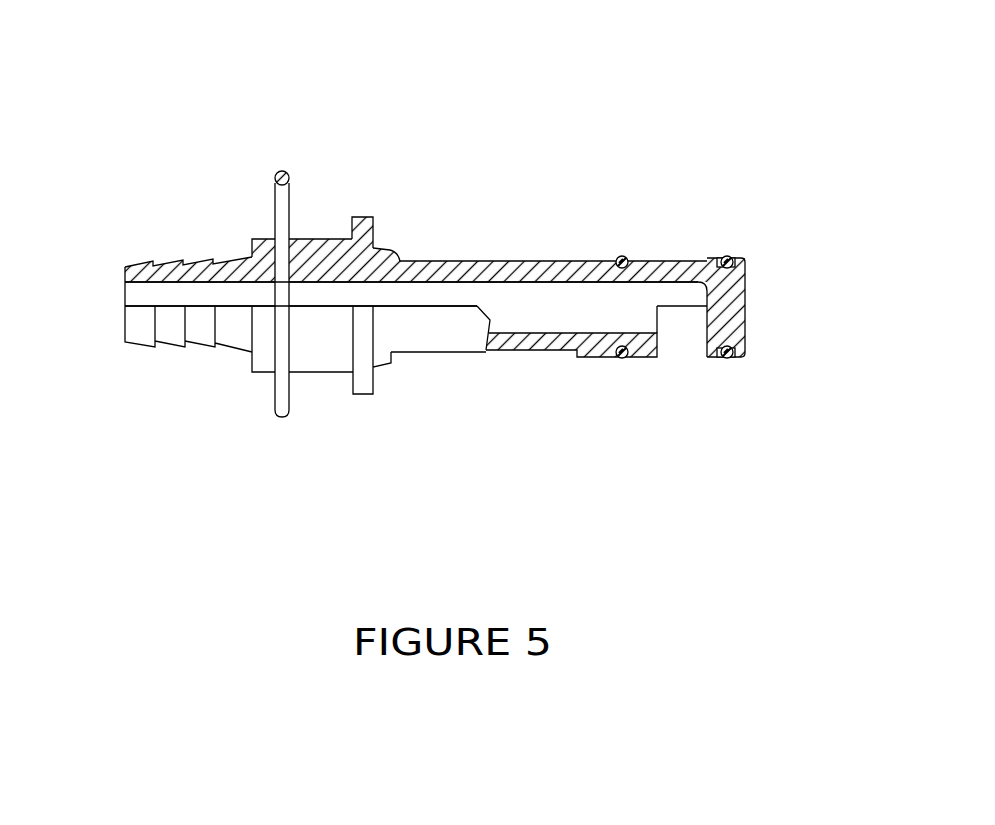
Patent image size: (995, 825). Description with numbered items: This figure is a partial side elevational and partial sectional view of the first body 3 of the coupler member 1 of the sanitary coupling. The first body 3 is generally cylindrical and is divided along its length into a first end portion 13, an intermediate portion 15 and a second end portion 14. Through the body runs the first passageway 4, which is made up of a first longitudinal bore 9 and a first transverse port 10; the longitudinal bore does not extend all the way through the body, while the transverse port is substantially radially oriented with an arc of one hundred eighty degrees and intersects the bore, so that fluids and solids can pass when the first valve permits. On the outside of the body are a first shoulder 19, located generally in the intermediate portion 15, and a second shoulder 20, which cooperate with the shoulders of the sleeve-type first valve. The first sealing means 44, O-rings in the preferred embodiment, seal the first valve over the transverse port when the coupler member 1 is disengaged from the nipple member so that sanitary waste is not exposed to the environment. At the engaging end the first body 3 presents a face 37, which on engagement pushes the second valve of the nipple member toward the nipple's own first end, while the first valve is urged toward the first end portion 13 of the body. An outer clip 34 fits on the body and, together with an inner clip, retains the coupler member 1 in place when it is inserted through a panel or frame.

The coupler member 1 is at (213, 263).
The first body 3 is at (427, 261).
The first passageway 4 is at (563, 295).
The first longitudinal bore 9 is at (490, 291).
The first transverse port 10 is at (703, 305).
The first end portion 13 is at (123, 320).
The second end portion 14 is at (752, 333).
The intermediate portion 15 is at (352, 218).
The first shoulder 19 is at (377, 223).
The second shoulder 20 is at (573, 261).
The outer clip 34 is at (282, 390).
The face 37 is at (748, 272).
The first sealing means 44 is at (616, 270).